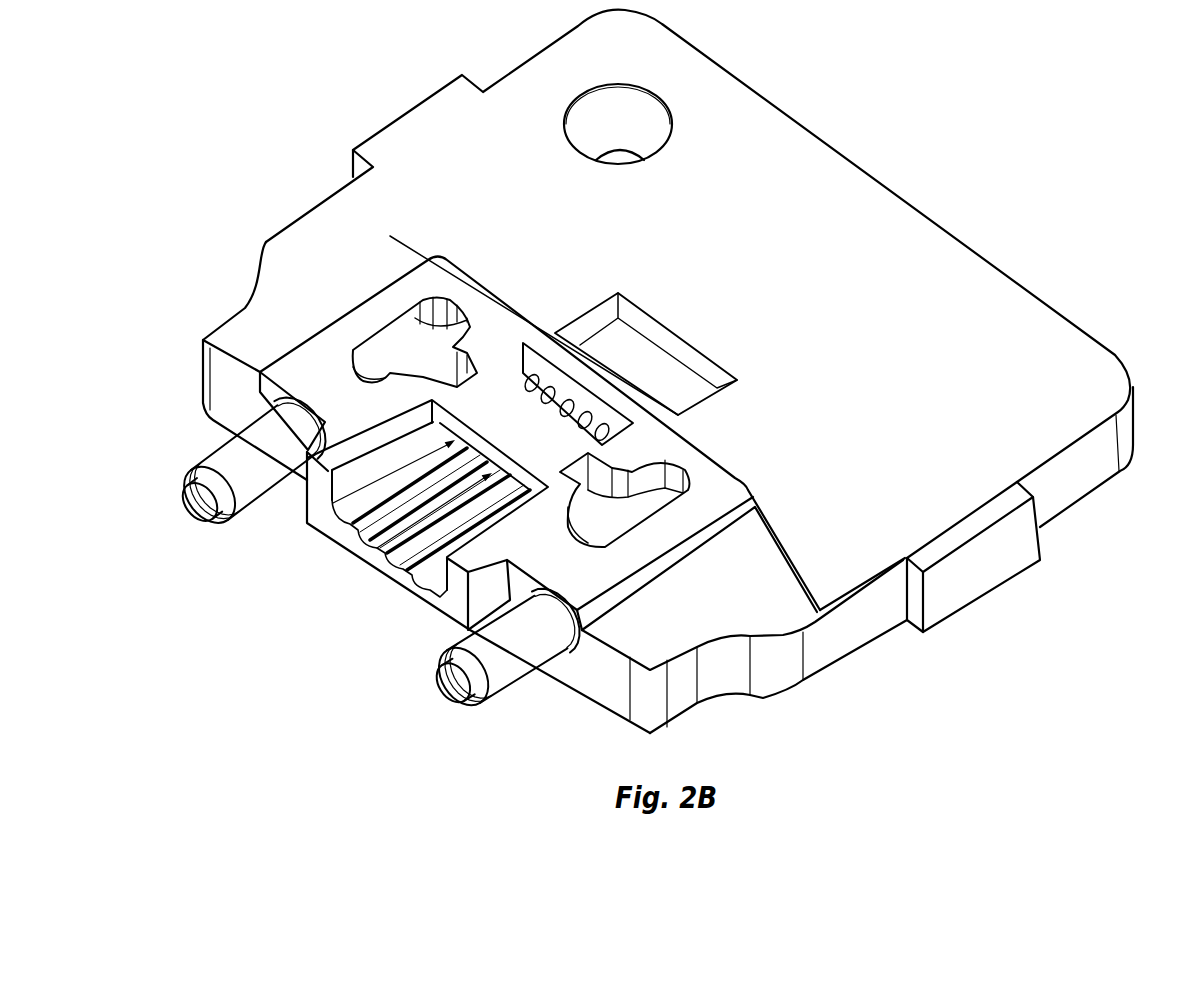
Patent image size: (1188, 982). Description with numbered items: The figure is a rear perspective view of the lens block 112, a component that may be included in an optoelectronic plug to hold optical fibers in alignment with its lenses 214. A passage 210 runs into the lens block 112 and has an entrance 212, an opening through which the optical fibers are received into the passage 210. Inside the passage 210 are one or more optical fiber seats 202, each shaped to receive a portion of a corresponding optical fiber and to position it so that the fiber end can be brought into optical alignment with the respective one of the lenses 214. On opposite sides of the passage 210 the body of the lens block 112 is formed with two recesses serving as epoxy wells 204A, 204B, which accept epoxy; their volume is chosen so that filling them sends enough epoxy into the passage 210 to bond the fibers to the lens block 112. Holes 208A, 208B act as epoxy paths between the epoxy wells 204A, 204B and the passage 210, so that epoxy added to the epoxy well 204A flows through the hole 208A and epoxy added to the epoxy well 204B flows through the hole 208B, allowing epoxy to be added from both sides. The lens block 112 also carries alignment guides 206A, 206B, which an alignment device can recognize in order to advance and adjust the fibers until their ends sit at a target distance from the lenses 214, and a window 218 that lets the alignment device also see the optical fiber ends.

The lens block 112 is at (258, 72).
The optical fiber seats 202 is at (595, 526).
The epoxy well 204A is at (565, 535).
The epoxy well 204B is at (415, 318).
The alignment guide 206A is at (670, 447).
The alignment guide 206B is at (390, 236).
The hole (epoxy path) 208A is at (605, 503).
The hole (epoxy path) 208B is at (441, 376).
The passage 210 is at (427, 567).
The entrance 212 is at (347, 525).
The lenses 214 is at (447, 383).
The window 218 is at (614, 412).